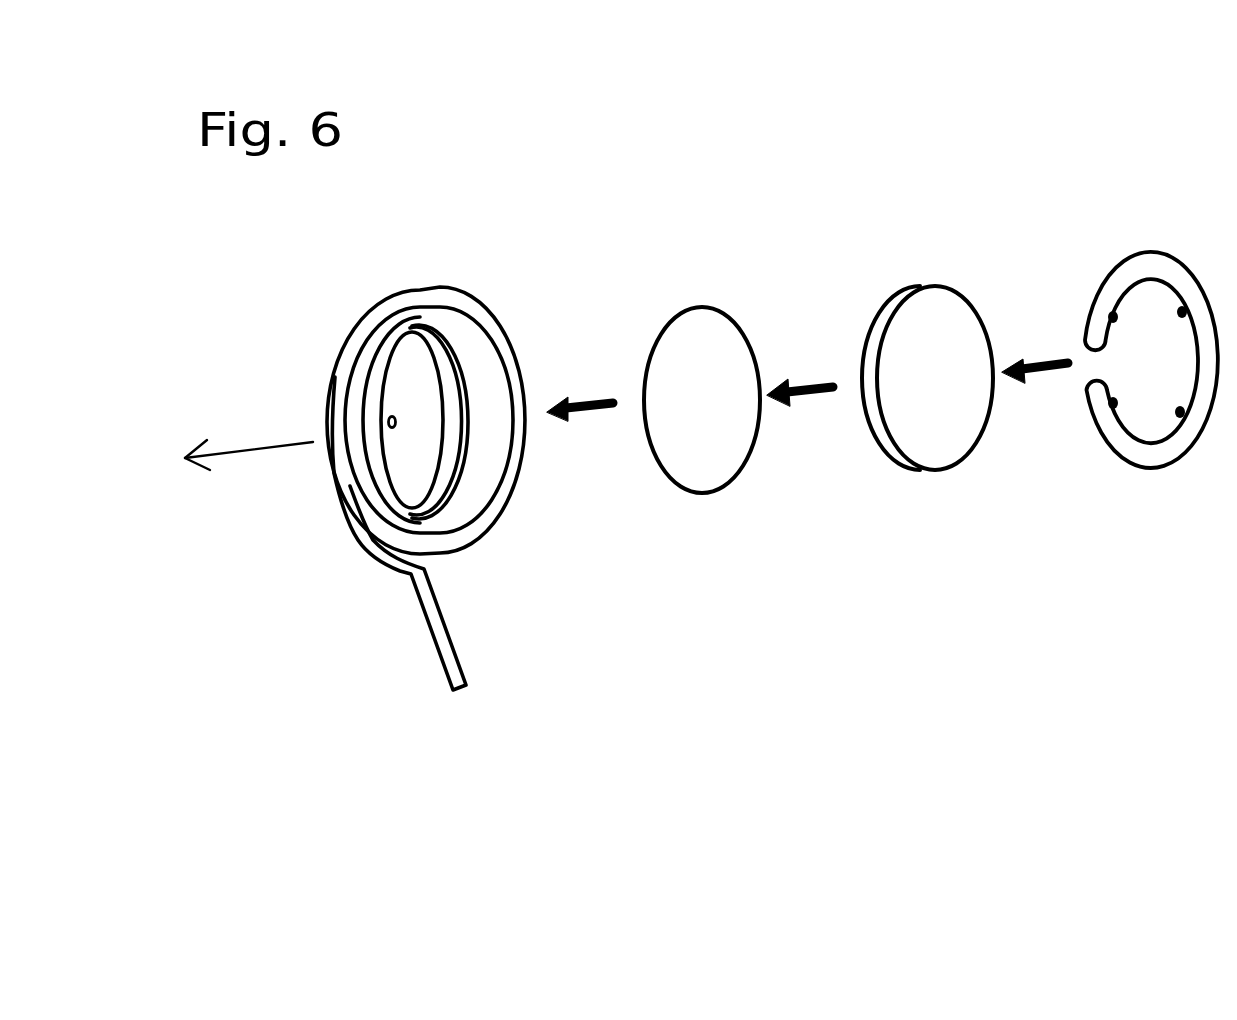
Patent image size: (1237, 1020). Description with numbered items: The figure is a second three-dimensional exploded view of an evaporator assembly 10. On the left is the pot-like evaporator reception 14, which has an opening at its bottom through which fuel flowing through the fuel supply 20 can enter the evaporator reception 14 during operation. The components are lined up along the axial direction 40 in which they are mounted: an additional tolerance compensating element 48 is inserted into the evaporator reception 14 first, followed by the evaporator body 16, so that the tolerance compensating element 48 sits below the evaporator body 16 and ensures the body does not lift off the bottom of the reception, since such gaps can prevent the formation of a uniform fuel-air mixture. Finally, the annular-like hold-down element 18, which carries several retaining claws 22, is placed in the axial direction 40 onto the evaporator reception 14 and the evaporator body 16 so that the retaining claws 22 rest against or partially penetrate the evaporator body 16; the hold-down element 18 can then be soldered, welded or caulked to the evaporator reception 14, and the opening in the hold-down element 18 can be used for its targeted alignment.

The evaporator assembly 10 is at (347, 760).
The evaporator reception 14 is at (375, 317).
The evaporator body 16 is at (923, 297).
The hold-down element 18 is at (1150, 263).
The fuel supply 20 is at (406, 589).
The retaining claws 22 is at (1175, 318).
The axial direction 40 is at (248, 444).
The tolerance compensating element 48 is at (688, 327).